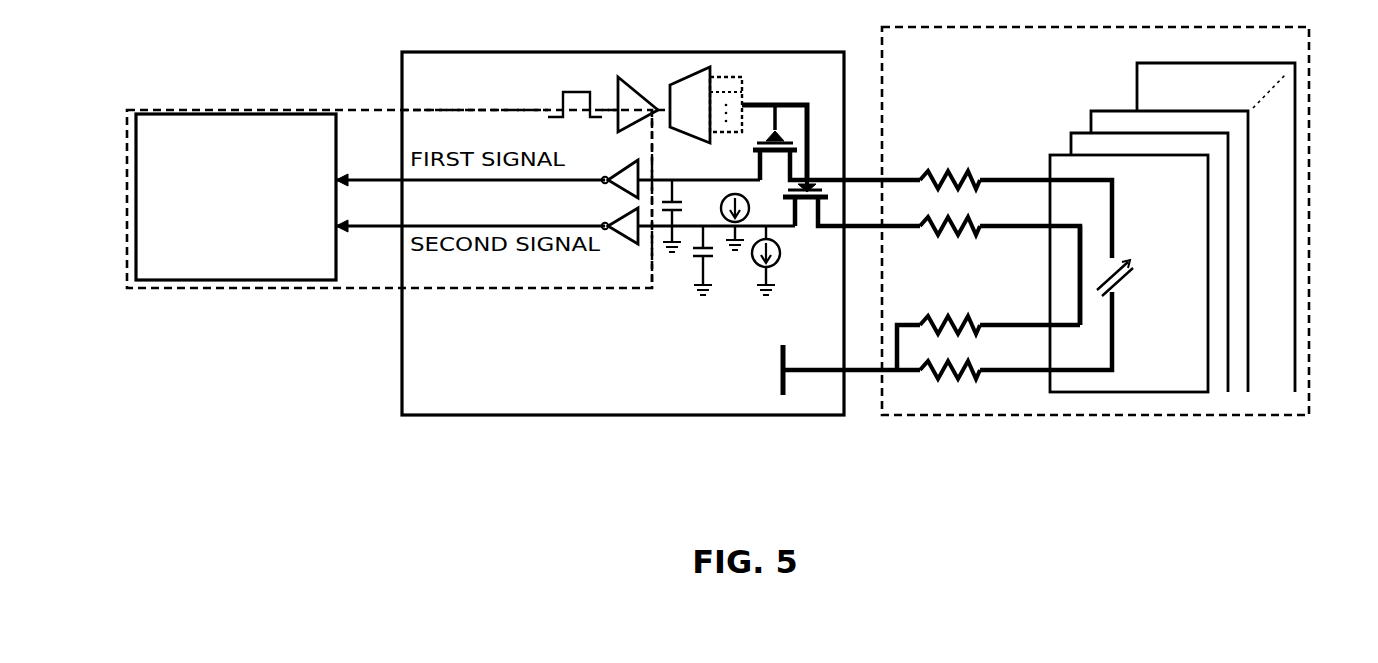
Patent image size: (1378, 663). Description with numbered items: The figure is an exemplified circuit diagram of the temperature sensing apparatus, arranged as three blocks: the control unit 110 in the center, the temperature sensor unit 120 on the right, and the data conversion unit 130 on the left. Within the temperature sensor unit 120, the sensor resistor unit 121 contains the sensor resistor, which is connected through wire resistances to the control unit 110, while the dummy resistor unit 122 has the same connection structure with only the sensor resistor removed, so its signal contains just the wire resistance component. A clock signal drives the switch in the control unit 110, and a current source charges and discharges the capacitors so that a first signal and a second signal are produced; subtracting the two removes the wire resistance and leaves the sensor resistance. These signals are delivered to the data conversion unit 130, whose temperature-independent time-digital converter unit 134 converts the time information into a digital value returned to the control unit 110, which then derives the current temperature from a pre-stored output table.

The control unit 110 is at (591, 416).
The temperature sensor unit 120 is at (1058, 416).
The sensor resistor unit 121 is at (1100, 393).
The dummy resistor unit 122 is at (1080, 327).
The data conversion unit 130 is at (365, 289).
The time-digital converter unit 134 is at (193, 281).